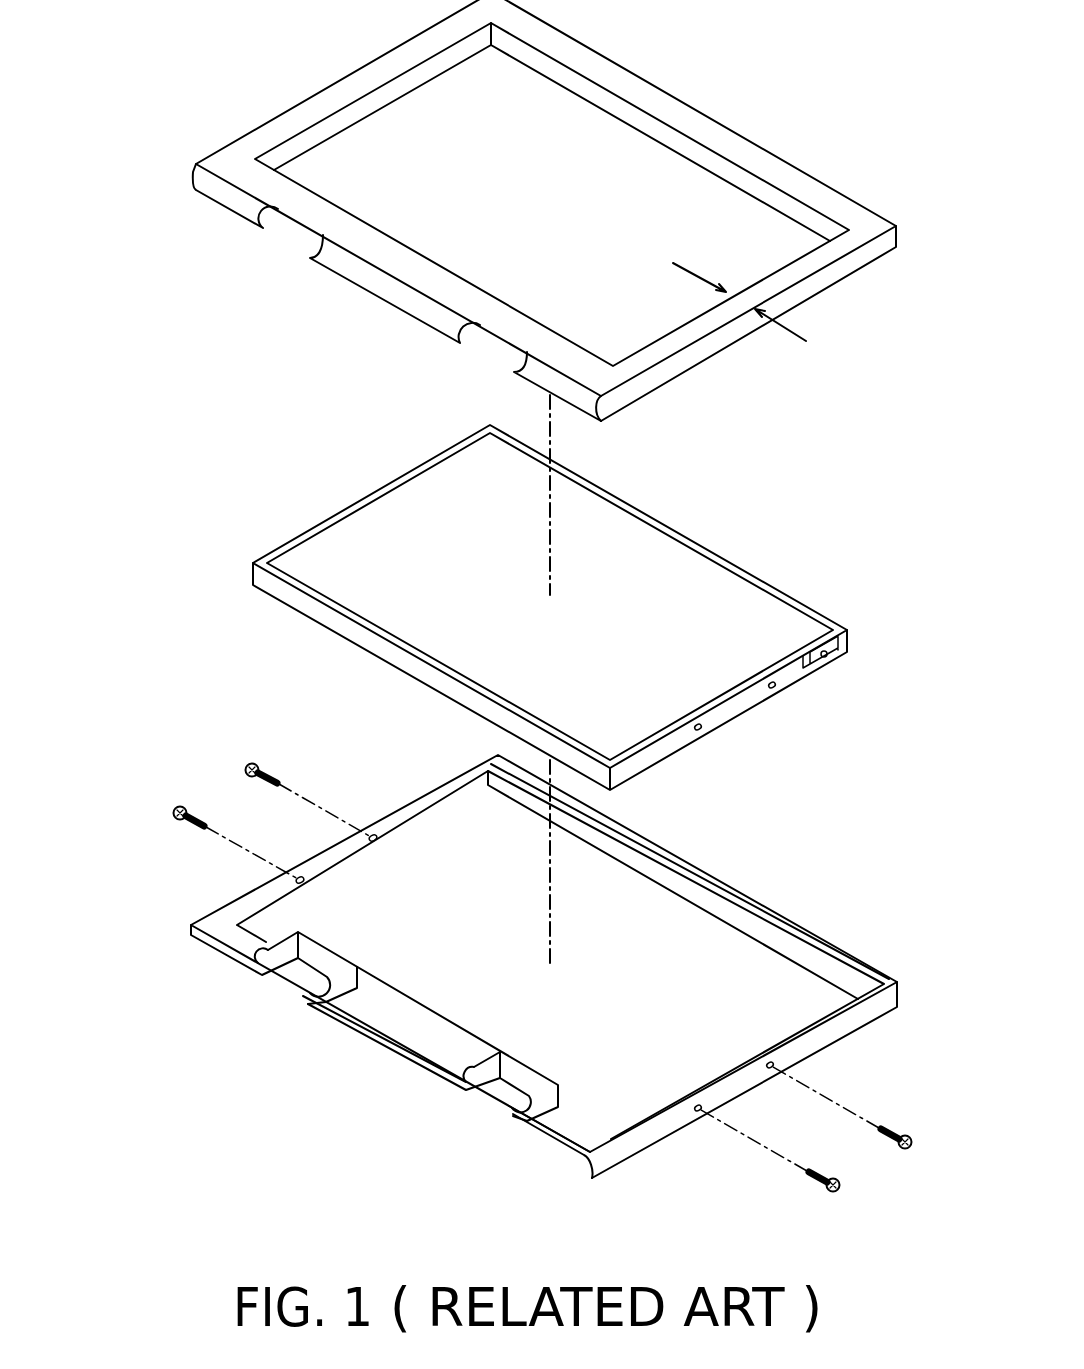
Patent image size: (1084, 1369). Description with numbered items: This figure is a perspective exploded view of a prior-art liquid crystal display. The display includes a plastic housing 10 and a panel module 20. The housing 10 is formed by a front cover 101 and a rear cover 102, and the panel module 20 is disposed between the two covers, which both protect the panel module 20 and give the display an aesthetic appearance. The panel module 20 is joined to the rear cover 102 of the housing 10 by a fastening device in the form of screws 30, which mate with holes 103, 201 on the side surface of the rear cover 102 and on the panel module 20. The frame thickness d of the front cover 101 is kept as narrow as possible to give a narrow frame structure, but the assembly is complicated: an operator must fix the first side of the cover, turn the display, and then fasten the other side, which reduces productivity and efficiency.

The housing 10 is at (130, 377).
The front cover 101 is at (210, 207).
The rear cover 102 is at (200, 925).
The holes 103 is at (777, 1064).
The panel module 20 is at (737, 593).
The holes 201 is at (776, 686).
The screws 30 is at (194, 806).
The frame thickness d is at (756, 308).